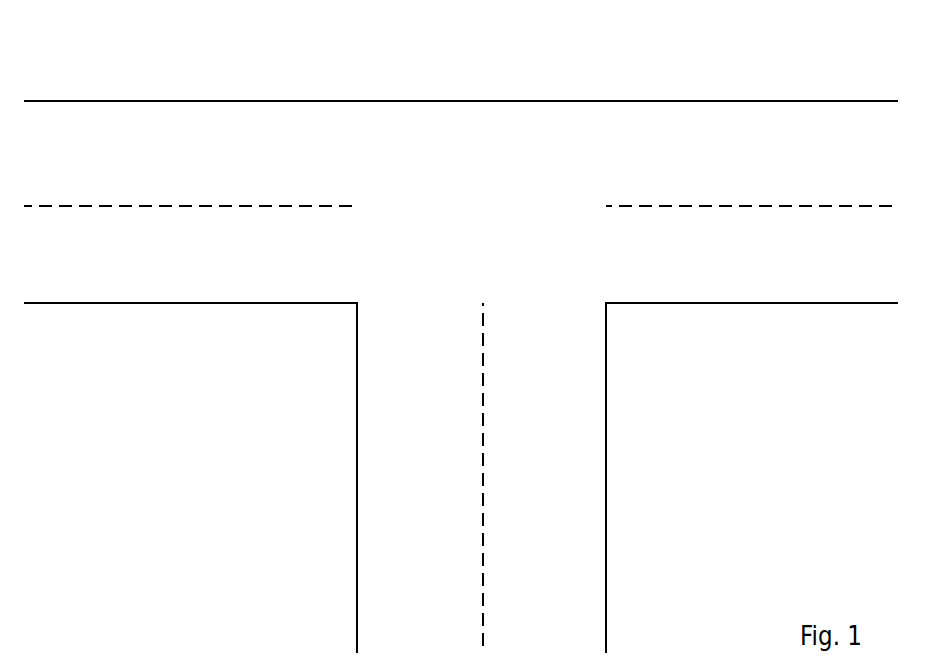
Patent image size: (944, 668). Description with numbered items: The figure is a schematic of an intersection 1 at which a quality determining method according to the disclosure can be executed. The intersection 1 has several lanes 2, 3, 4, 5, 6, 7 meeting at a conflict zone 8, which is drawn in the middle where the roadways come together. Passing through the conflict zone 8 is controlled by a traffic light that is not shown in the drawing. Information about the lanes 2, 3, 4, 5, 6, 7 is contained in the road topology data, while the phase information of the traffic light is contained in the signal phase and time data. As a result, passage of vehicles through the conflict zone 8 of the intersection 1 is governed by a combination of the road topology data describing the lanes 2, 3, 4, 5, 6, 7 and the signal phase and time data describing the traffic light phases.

The intersection 1 is at (450, 61).
The lane 2 is at (387, 401).
The lane 3 is at (542, 377).
The lane 4 is at (764, 268).
The lane 5 is at (737, 163).
The lane 6 is at (220, 163).
The lane 7 is at (178, 272).
The conflict zone 8 is at (496, 199).